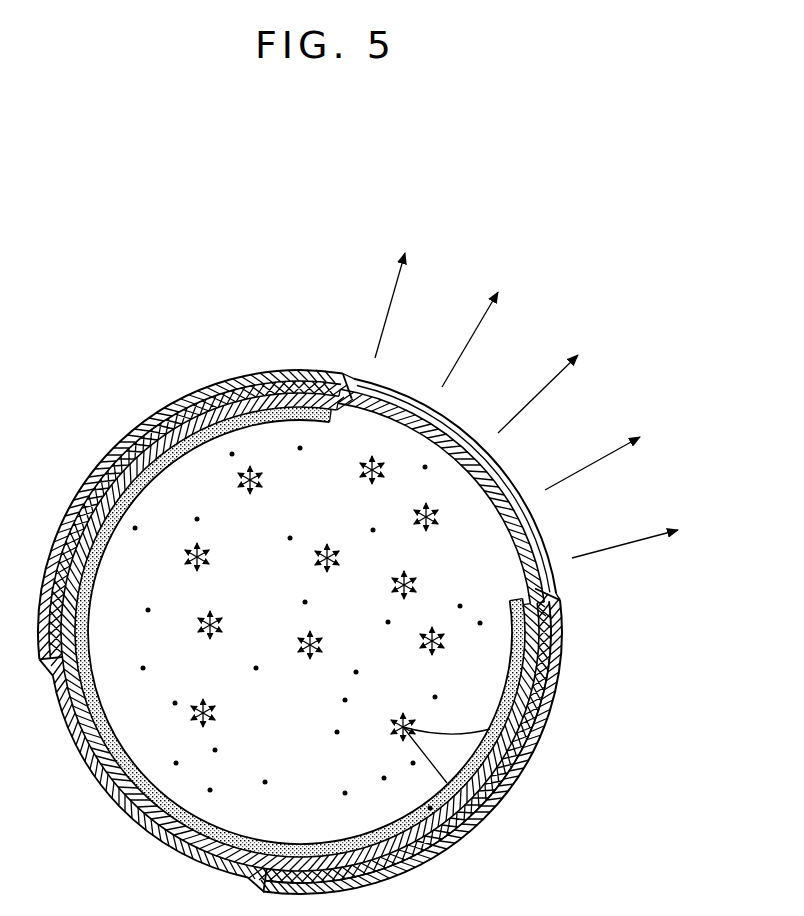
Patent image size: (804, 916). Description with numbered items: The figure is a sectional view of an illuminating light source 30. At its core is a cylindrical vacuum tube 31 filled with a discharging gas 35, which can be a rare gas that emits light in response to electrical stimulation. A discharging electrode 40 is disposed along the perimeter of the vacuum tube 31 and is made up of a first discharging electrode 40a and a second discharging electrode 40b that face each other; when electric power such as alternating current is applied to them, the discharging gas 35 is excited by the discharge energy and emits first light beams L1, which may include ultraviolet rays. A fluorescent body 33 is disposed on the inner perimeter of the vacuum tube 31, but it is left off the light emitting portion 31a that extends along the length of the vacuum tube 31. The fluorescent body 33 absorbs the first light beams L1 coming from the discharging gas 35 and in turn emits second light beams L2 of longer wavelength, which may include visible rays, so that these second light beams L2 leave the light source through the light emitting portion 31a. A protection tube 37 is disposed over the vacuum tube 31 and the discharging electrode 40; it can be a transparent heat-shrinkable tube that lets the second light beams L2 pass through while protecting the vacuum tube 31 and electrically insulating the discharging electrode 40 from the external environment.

The illuminating light source 30 is at (95, 412).
The vacuum tube 31 is at (530, 657).
The light emitting portion 31a is at (537, 560).
The fluorescent body 33 is at (512, 700).
The discharging gas 35 is at (477, 813).
The protection tube 37 is at (422, 862).
The discharging electrode 40 is at (497, 802).
The first discharging electrode 40a is at (512, 786).
The second discharging electrode 40b is at (213, 393).
The first light beams L1 is at (490, 732).
The second light beams L2 is at (593, 467).